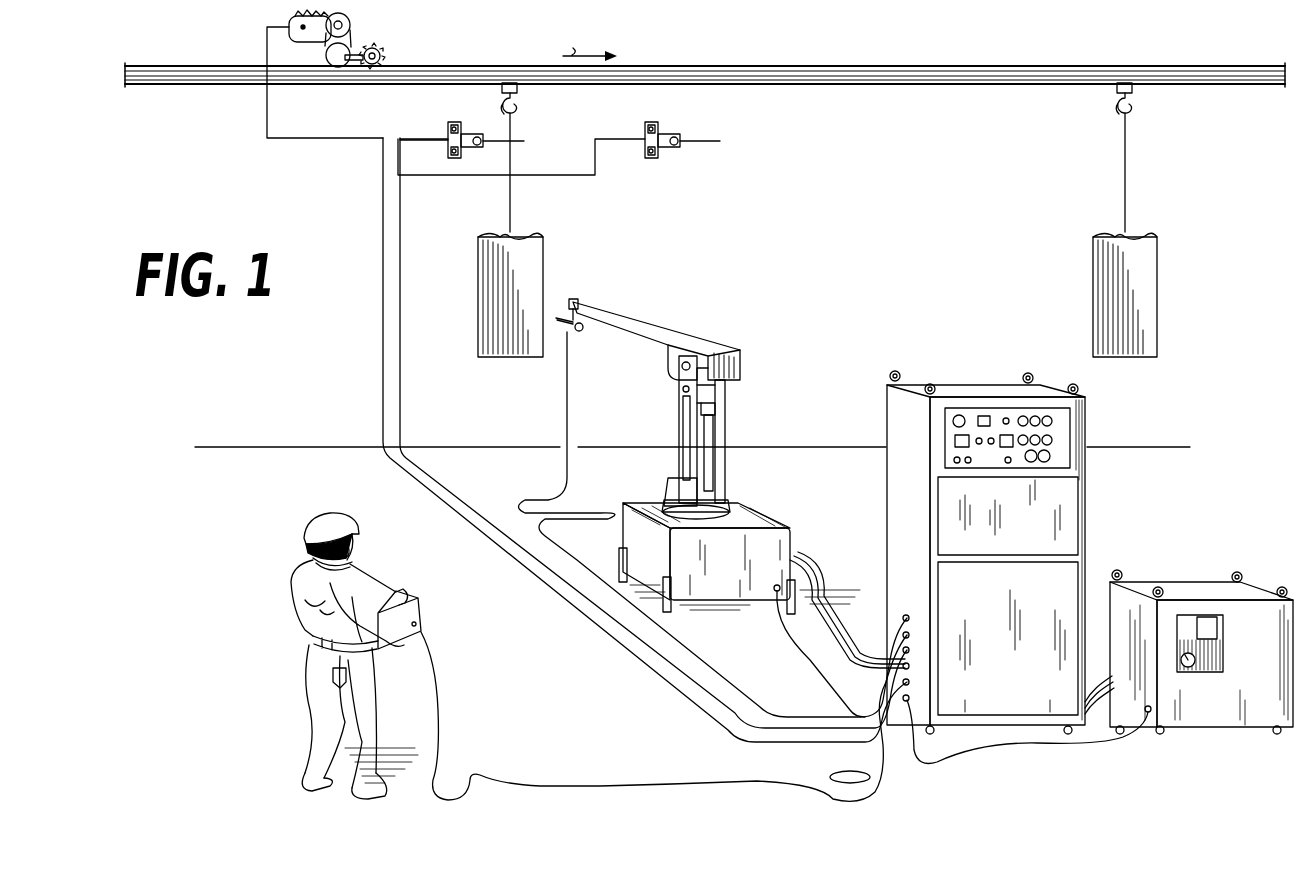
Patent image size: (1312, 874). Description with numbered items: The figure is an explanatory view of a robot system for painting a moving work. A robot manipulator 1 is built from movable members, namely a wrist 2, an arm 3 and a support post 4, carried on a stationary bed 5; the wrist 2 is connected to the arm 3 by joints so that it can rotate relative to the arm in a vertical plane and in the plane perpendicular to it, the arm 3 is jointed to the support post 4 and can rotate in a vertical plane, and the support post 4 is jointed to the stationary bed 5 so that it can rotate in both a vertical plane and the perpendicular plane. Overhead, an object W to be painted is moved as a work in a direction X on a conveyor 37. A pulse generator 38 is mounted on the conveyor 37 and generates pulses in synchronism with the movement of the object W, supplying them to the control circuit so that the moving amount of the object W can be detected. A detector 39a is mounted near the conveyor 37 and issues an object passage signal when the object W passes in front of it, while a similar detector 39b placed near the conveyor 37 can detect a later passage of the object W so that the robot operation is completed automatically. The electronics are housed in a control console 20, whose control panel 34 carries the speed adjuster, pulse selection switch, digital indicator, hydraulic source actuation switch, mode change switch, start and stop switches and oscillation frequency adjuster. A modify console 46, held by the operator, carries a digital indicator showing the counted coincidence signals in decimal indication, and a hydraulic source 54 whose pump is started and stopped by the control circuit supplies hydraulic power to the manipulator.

The robot manipulator 1 is at (743, 327).
The wrist 2 is at (574, 335).
The arm 3 is at (640, 322).
The support post 4 is at (728, 396).
The stationary bed 5 is at (755, 553).
The control console 20 is at (1014, 552).
The control panel 34 is at (1060, 436).
The conveyor 37 is at (986, 86).
The pulse generator 38 is at (290, 40).
The detector 39a is at (474, 106).
The detector 39b is at (670, 134).
The modify console 46 is at (423, 611).
The hydraulic source 54 is at (1204, 598).
The object to be painted W is at (478, 298).
The direction X is at (590, 43).